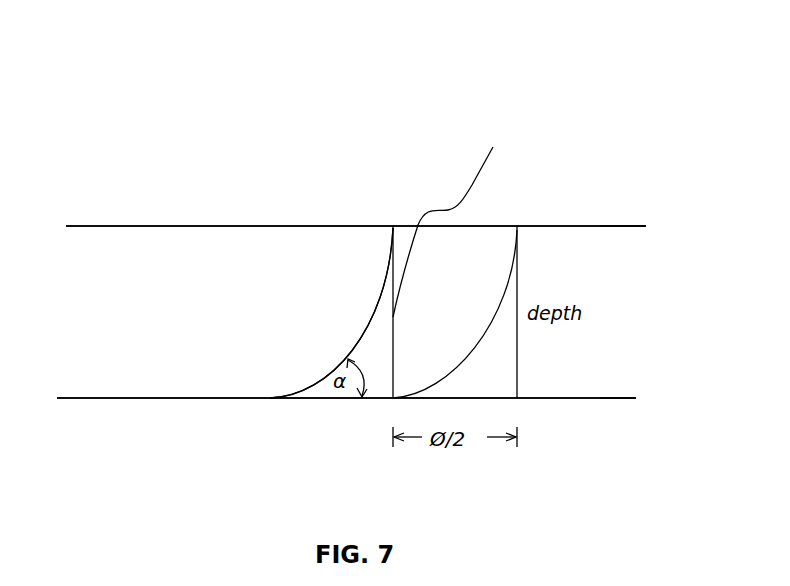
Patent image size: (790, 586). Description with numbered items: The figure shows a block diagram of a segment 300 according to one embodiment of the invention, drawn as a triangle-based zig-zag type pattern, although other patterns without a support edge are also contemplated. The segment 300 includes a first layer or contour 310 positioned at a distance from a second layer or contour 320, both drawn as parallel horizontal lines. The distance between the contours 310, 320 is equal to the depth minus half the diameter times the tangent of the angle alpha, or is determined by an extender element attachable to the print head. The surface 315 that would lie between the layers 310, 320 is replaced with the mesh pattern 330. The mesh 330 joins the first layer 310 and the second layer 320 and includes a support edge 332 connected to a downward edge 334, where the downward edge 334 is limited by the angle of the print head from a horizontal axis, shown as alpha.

The segment 300 is at (116, 154).
The first layer or contour 310 is at (623, 226).
The surface 315 is at (628, 267).
The second layer or contour 320 is at (605, 398).
The mesh pattern 330 is at (363, 265).
The support edge 332 is at (458, 221).
The downward edge 334 is at (362, 333).